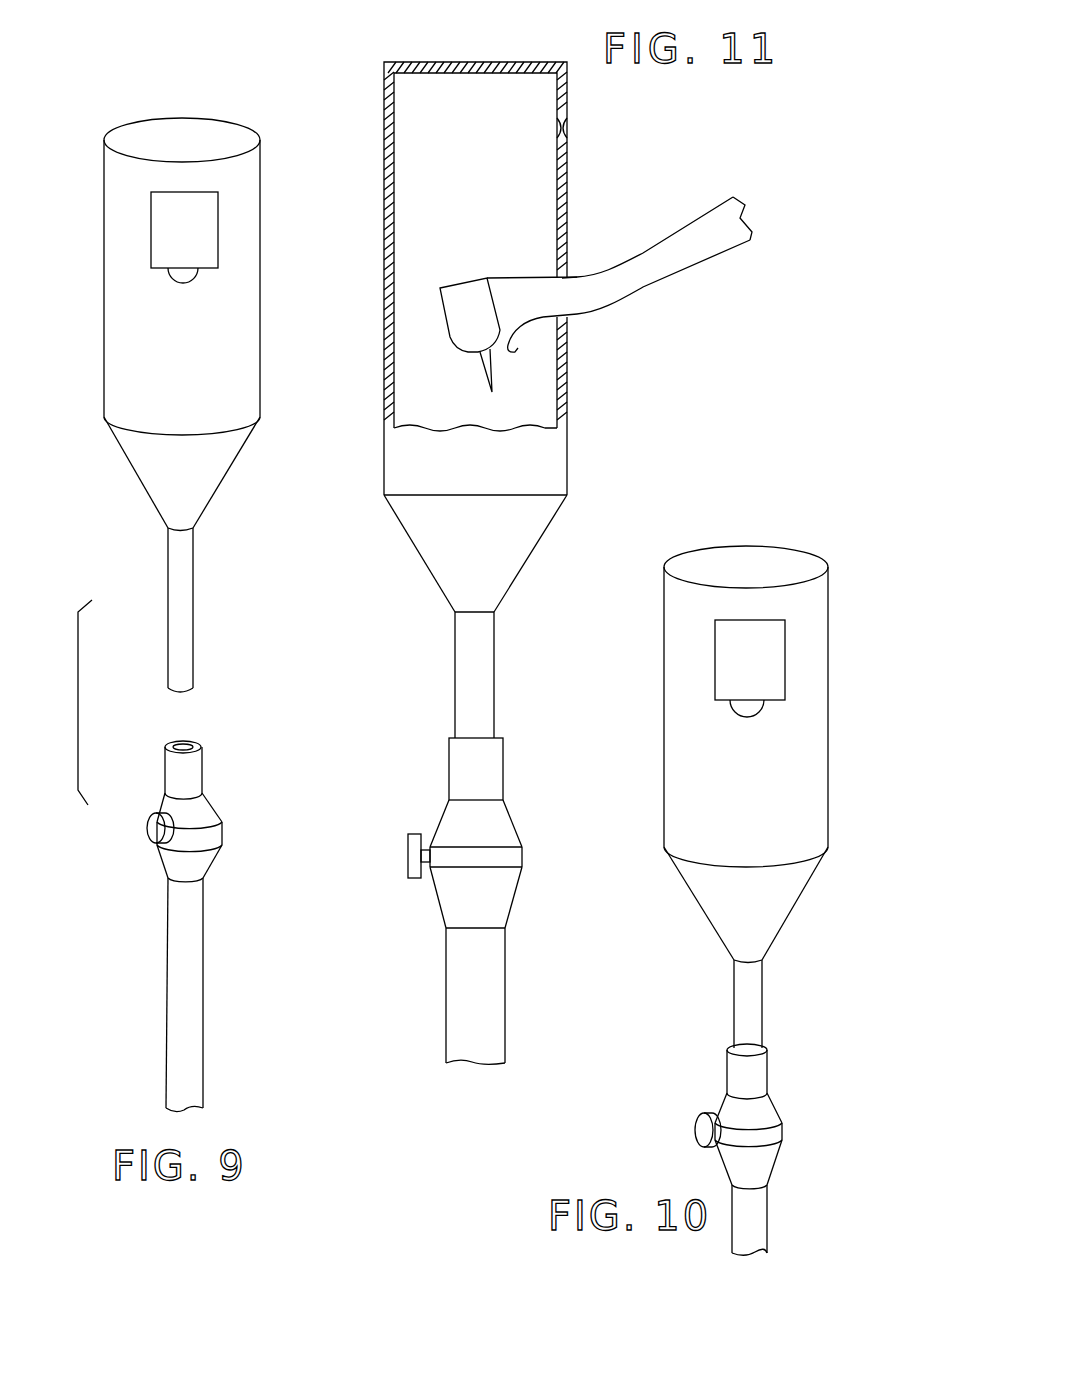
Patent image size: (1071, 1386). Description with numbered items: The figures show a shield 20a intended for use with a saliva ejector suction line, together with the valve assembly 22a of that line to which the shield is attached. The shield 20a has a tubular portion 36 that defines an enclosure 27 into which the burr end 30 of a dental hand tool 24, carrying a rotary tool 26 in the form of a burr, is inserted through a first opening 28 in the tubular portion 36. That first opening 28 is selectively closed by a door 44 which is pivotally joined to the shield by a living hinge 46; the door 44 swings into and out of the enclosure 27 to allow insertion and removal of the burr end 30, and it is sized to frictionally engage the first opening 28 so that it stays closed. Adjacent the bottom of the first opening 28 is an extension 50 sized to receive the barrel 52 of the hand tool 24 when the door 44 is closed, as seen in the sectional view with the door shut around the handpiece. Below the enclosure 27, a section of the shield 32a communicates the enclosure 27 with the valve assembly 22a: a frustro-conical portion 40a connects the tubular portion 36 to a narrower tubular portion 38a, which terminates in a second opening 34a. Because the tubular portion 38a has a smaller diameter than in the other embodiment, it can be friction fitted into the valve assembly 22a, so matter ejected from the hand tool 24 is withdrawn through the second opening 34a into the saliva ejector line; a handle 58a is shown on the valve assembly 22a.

In FIG. 9, the shield 20a is at (152, 412).
In FIG. 11, the shield 20a is at (485, 371).
In FIG. 10, the shield 20a is at (739, 764).
In FIG. 9, the valve assembly 22a is at (183, 926).
In FIG. 11, the valve assembly 22a is at (430, 901).
In FIG. 10, the valve assembly 22a is at (745, 1149).
In FIG. 11, the hand tool 24 is at (687, 224).
In FIG. 11, the rotary tool 26 is at (485, 368).
In FIG. 11, the enclosure 27 is at (410, 244).
In FIG. 10, the first opening 28 is at (716, 705).
In FIG. 11, the burr end 30 is at (447, 315).
In FIG. 9, the section of the shield 32a is at (162, 561).
In FIG. 11, the section of the shield 32a is at (516, 614).
In FIG. 10, the section of the shield 32a is at (742, 947).
In FIG. 9, the second opening 34a is at (187, 692).
In FIG. 9, the tubular portion 36 is at (104, 388).
In FIG. 11, the tubular portion 36 is at (388, 415).
In FIG. 10, the tubular portion 36 is at (823, 793).
In FIG. 9, the tubular portion 38a is at (193, 612).
In FIG. 11, the tubular portion 38a is at (490, 692).
In FIG. 10, the tubular portion 38a is at (765, 1004).
In FIG. 9, the frustro-conical portion 40a is at (140, 460).
In FIG. 11, the frustro-conical portion 40a is at (525, 565).
In FIG. 10, the frustro-conical portion 40a is at (695, 900).
In FIG. 9, the door 44 is at (160, 213).
In FIG. 11, the door 44 is at (567, 188).
In FIG. 10, the door 44 is at (726, 644).
In FIG. 11, the living hinge 46 is at (572, 130).
In FIG. 9, the extension 50 is at (182, 283).
In FIG. 11, the extension 50 is at (568, 320).
In FIG. 10, the extension 50 is at (745, 718).
In FIG. 11, the barrel 52 is at (568, 278).
In FIG. 9, the valve handle 58a is at (153, 838).
In FIG. 11, the valve handle 58a is at (408, 870).
In FIG. 10, the valve handle 58a is at (703, 1113).